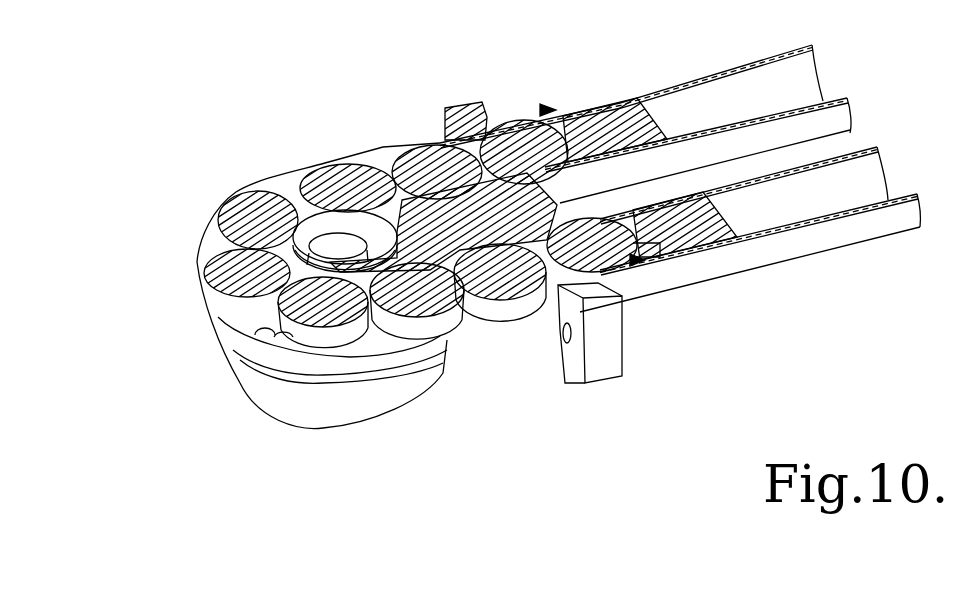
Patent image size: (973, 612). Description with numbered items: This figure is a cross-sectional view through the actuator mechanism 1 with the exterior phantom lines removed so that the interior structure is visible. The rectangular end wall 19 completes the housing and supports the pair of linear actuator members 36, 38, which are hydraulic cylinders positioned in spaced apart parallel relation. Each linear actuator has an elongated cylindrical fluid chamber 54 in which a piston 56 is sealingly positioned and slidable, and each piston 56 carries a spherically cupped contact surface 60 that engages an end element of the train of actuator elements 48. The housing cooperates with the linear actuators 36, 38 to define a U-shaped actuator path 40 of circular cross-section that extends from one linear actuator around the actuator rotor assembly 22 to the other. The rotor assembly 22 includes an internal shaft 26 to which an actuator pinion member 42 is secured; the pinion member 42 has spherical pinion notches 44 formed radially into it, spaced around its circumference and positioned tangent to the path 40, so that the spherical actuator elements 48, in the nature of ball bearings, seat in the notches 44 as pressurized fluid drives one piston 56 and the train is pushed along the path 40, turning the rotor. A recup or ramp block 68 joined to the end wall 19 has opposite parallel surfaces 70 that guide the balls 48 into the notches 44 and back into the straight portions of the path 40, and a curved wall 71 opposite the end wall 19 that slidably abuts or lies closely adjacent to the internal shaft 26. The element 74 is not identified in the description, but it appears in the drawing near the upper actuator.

The actuator mechanism 1 is at (155, 310).
The end wall 19 is at (575, 350).
The actuator rotor assembly 22 is at (318, 225).
The internal shaft 26 is at (302, 248).
The linear actuator member 36 is at (733, 63).
The linear actuator member 38 is at (838, 240).
The U-shaped actuator path 40 is at (228, 320).
The actuator pinion member 42 is at (217, 243).
The pinion notches 44 is at (290, 357).
The actuator elements 48 is at (403, 330).
The fluid chamber 54 is at (867, 160).
The piston 56 is at (597, 120).
The spherically cupped contact surface 60 is at (627, 250).
The ramp block 68 is at (490, 200).
The parallel surfaces 70 is at (480, 305).
The curved wall 71 is at (440, 325).
The stop block 74 is at (470, 140).